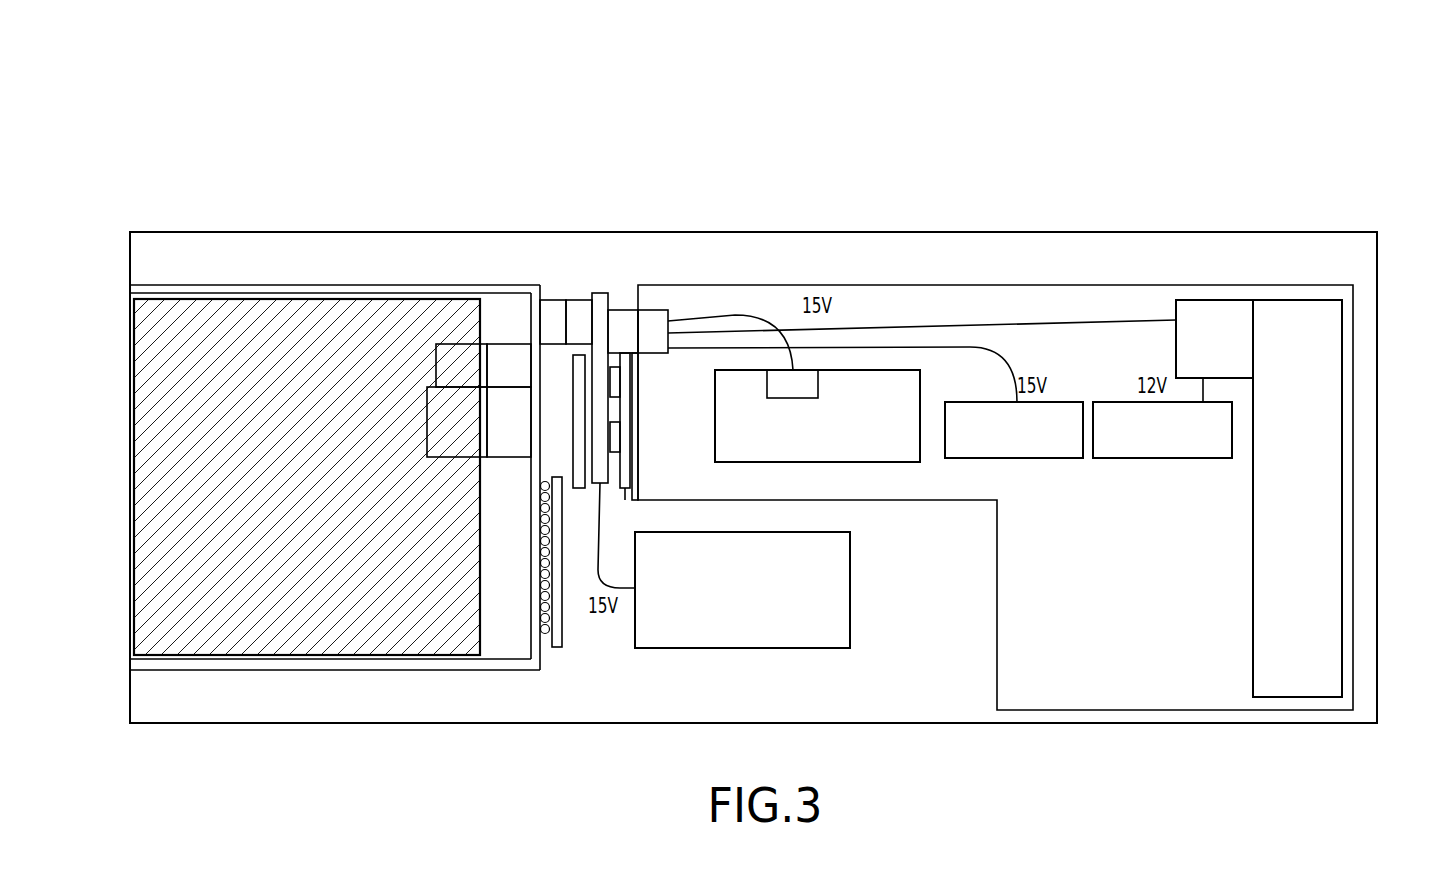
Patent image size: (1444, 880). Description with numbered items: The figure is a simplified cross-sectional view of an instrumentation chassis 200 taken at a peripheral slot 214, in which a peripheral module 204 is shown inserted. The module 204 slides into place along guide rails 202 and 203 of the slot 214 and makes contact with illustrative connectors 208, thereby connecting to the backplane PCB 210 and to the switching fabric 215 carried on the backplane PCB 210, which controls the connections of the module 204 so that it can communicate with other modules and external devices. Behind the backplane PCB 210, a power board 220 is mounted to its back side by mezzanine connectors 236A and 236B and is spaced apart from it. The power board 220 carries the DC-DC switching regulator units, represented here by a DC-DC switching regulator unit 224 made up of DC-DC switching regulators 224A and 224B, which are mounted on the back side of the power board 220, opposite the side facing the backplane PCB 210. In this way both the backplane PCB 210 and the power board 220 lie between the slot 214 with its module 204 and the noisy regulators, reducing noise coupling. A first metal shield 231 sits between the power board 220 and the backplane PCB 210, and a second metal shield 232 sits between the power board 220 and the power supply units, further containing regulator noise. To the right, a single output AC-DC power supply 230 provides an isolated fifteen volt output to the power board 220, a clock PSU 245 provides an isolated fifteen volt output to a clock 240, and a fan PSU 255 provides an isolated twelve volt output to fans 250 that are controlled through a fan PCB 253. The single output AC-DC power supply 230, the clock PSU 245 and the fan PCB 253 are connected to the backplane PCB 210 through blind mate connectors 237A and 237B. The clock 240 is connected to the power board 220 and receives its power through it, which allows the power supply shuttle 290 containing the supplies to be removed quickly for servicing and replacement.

The instrumentation chassis 200 is at (838, 130).
The guide rail 202 is at (177, 285).
The guide rail 203 is at (200, 670).
The module 204 is at (120, 470).
The connectors 208 is at (413, 457).
The backplane PCB 210 is at (533, 608).
The slot 214 is at (395, 698).
The switching fabric 215 is at (563, 632).
The power board 220 is at (600, 293).
The DC-DC switching regulator unit 224 is at (656, 404).
The DC-DC switching regulator 224A is at (617, 385).
The DC-DC switching regulator 224B is at (617, 433).
The single output AC-DC power supply 230 is at (880, 380).
The first metal shield 231 is at (575, 460).
The second metal shield 232 is at (625, 500).
The mezzanine connector 236A is at (553, 302).
The mezzanine connector 236B is at (580, 302).
The blind mate connector 237A is at (623, 310).
The blind mate connector 237B is at (653, 310).
The clock 240 is at (745, 643).
The clock PSU 245 is at (1022, 458).
The fans 250 is at (1330, 412).
The fan PCB 253 is at (1213, 300).
The fan PSU 255 is at (1162, 458).
The power supply shuttle 290 is at (1050, 285).